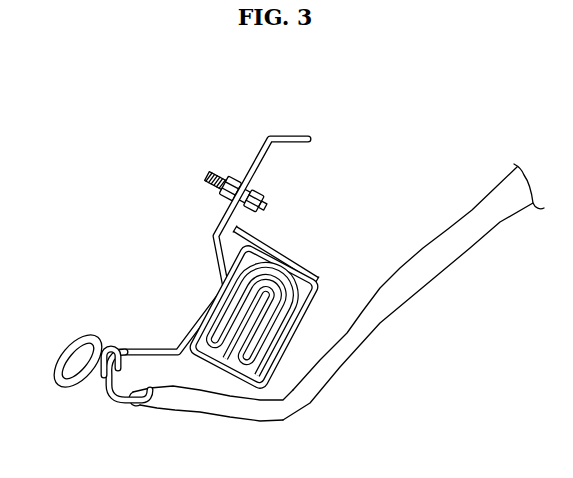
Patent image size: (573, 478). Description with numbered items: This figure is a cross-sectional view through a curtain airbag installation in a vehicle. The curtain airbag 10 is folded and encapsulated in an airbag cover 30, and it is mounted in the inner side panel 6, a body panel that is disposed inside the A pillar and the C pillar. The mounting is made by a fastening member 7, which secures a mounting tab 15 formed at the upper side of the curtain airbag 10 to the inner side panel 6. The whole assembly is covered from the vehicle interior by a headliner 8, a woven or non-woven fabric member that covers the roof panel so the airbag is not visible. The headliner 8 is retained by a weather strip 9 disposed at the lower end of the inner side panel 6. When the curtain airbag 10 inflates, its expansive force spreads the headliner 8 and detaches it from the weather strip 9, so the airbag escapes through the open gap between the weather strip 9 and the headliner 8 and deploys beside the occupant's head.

The inner side panel 6 is at (283, 133).
The fastening member 7 is at (267, 204).
The headliner 8 is at (347, 338).
The weather strip 9 is at (95, 400).
The curtain airbag 10 is at (213, 302).
The mounting tab 15 is at (236, 223).
The airbag cover 30 is at (283, 367).